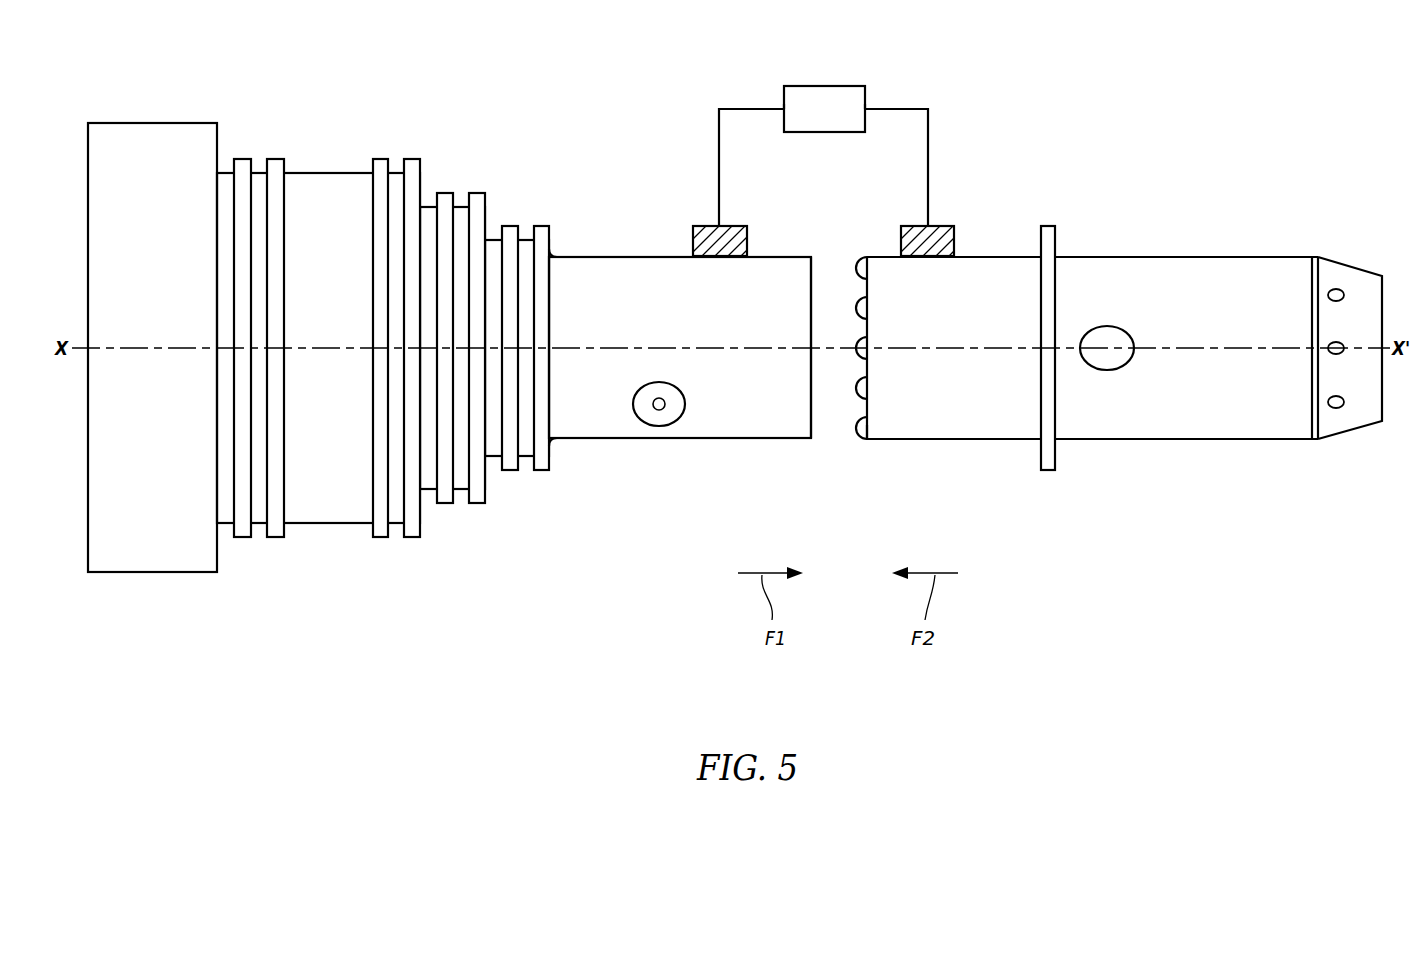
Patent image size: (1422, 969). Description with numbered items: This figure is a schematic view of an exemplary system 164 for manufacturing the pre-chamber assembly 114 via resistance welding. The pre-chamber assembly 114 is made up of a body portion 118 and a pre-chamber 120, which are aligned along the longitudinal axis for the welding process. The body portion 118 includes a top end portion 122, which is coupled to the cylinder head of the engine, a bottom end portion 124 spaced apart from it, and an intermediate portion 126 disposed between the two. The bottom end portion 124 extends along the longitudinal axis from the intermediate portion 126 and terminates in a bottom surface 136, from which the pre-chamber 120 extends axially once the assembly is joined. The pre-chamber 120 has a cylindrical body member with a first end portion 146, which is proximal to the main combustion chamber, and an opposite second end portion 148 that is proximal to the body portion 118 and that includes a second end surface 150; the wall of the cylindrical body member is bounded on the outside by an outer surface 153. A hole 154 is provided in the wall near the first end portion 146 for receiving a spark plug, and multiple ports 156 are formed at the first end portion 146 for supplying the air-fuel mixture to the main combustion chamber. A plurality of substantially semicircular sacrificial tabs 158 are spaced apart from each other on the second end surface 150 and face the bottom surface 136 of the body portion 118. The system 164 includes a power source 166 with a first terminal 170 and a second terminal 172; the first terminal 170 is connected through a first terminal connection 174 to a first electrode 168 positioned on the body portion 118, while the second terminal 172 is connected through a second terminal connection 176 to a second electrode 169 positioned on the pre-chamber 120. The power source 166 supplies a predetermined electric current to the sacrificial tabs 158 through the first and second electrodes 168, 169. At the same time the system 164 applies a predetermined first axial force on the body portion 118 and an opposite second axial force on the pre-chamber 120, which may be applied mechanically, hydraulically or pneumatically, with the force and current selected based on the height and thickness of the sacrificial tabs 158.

The pre-chamber assembly 114 is at (1357, 307).
The body portion 118 is at (383, 294).
The pre-chamber 120 is at (1080, 354).
The top end portion 122 is at (152, 123).
The bottom end portion 124 is at (686, 347).
The intermediate portion 126 is at (375, 159).
The bottom surface 136 is at (811, 422).
The first end portion 146 is at (1348, 270).
The second end portion 148 is at (925, 440).
The second end surface 150 is at (871, 428).
The outer surface 153 is at (610, 257).
The hole 154 is at (1107, 370).
The ports 156 is at (1336, 410).
The sacrificial tabs 158 is at (852, 432).
The system 164 is at (815, 150).
The power source 166 is at (840, 122).
The first electrode 168 is at (700, 236).
The second electrode 169 is at (908, 236).
The first terminal 170 is at (784, 104).
The second terminal 172 is at (866, 104).
The first terminal connection 174 is at (719, 168).
The second terminal connection 176 is at (928, 168).